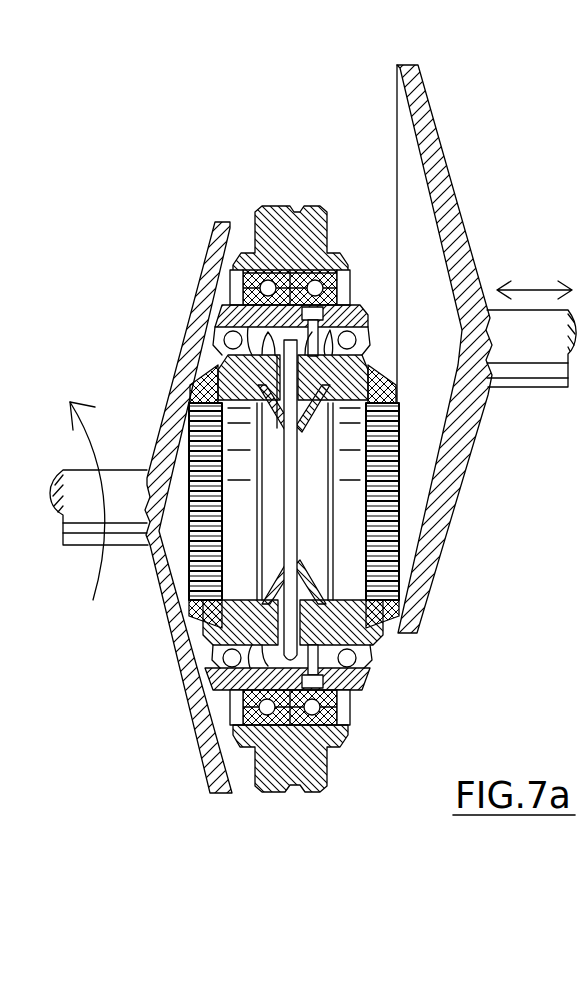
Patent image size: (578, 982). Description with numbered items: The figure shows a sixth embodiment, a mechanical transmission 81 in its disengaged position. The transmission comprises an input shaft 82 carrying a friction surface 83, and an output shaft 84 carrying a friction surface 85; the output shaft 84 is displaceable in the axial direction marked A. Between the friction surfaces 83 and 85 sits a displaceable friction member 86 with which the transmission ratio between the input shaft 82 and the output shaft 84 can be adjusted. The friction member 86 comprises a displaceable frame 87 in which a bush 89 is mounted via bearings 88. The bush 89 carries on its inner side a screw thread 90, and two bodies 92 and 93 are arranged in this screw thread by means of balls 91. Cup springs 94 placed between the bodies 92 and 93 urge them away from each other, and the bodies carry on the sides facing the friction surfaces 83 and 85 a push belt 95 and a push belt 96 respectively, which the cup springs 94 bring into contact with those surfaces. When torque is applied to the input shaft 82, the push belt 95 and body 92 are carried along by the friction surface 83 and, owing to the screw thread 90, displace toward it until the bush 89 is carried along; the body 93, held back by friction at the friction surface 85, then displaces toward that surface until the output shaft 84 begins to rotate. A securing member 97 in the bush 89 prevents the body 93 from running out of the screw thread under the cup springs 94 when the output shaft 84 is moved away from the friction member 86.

The mechanical transmission 81 is at (152, 195).
The input shaft 82 is at (116, 482).
The friction surface 83 is at (212, 247).
The output shaft 84 is at (539, 374).
The friction surface 85 is at (432, 533).
The friction member 86 is at (345, 749).
The frame 87 is at (302, 210).
The bearings 88 is at (339, 266).
The bush 89 is at (360, 307).
The screw thread 90 is at (202, 388).
The balls 91 is at (212, 661).
The body 92 is at (212, 330).
The body 93 is at (378, 380).
The cup springs 94 is at (322, 582).
The push belt 95 is at (190, 586).
The push belt 96 is at (392, 583).
The securing member 97 is at (352, 706).